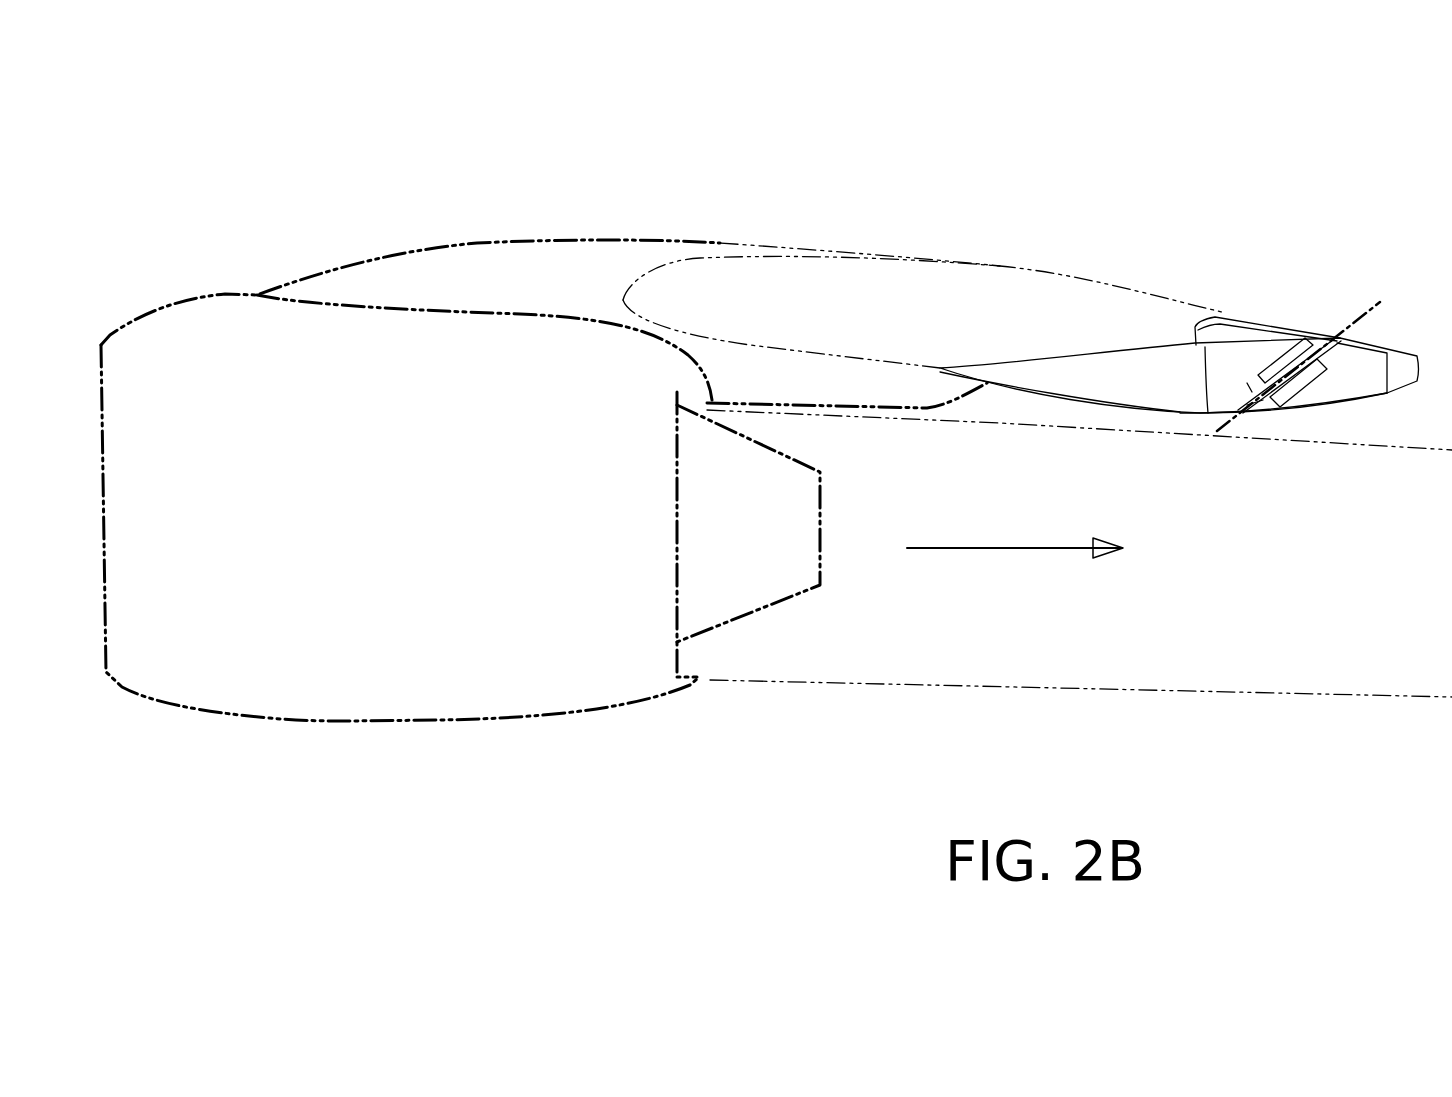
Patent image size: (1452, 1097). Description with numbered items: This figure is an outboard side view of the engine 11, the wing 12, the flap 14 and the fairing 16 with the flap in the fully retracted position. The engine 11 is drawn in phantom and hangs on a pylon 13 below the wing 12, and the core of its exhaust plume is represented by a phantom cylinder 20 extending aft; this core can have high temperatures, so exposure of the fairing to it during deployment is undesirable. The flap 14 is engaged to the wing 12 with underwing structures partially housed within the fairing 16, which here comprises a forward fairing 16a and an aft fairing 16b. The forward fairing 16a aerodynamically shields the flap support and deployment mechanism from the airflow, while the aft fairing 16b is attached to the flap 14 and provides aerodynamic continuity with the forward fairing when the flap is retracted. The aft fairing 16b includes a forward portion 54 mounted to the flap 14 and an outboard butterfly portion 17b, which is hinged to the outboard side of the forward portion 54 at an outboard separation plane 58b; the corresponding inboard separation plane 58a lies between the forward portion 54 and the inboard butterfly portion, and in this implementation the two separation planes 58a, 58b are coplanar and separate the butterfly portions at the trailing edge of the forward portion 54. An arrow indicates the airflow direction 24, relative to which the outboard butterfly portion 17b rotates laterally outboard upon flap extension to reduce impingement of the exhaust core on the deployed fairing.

The engine 11 is at (438, 720).
The wing 12 is at (976, 278).
The pylon 13 is at (801, 385).
The flap 14 is at (1248, 318).
The fairing 16 is at (1237, 423).
The forward fairing 16a is at (1123, 387).
The aft fairing 16b is at (1317, 410).
The outboard butterfly portion 17b is at (1373, 343).
The phantom cylinder 20 is at (1127, 686).
The airflow direction 24 is at (1013, 549).
The forward portion 54 is at (1230, 373).
The inboard separation plane 58a is at (1213, 435).
The outboard separation plane 58b is at (1306, 458).